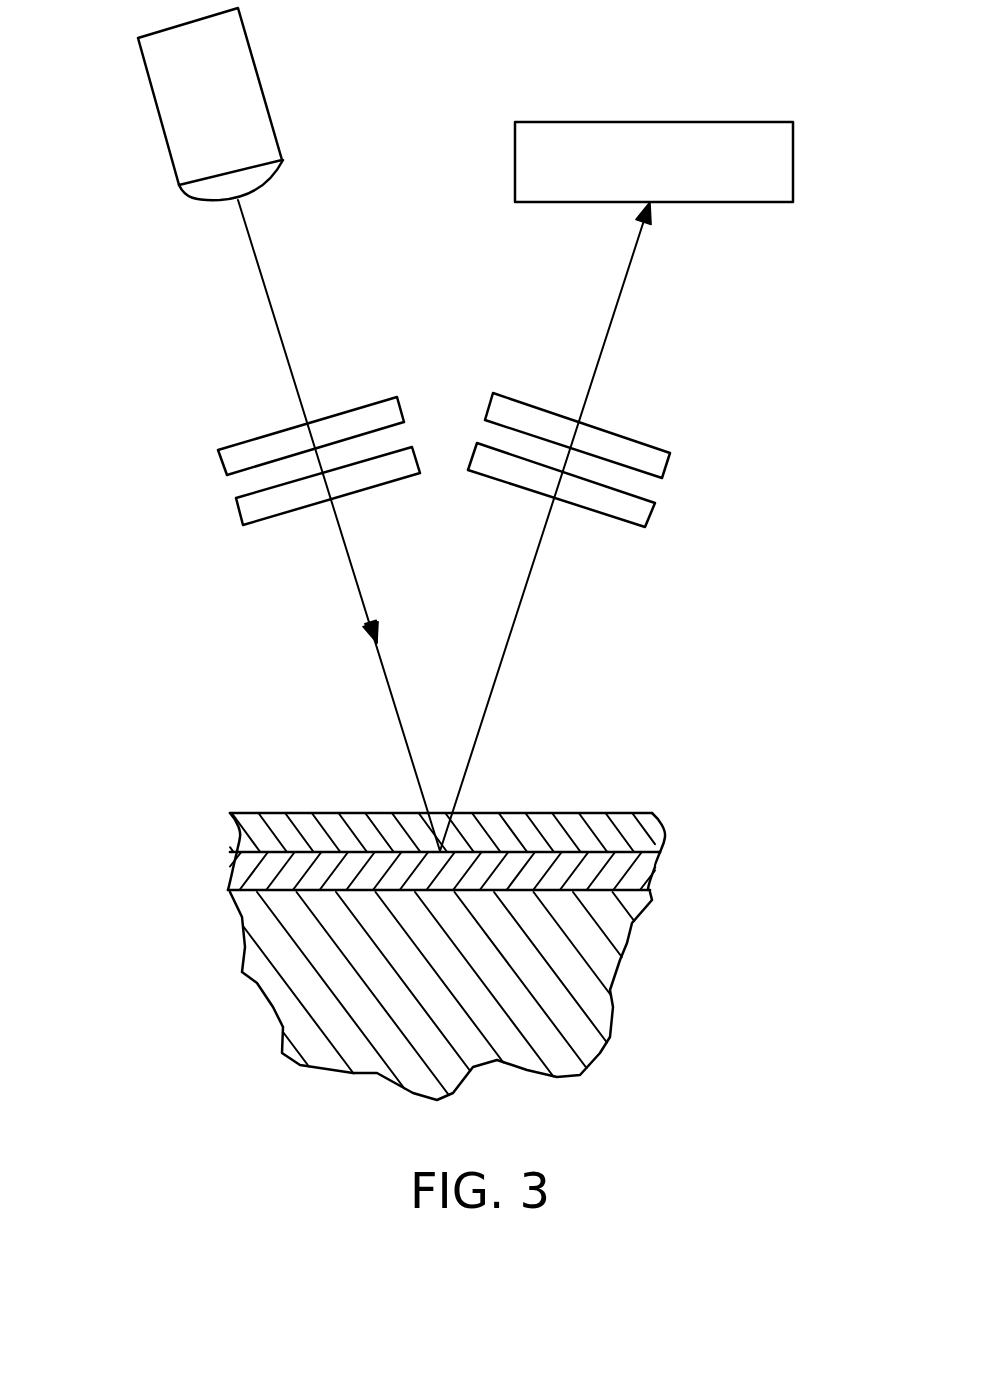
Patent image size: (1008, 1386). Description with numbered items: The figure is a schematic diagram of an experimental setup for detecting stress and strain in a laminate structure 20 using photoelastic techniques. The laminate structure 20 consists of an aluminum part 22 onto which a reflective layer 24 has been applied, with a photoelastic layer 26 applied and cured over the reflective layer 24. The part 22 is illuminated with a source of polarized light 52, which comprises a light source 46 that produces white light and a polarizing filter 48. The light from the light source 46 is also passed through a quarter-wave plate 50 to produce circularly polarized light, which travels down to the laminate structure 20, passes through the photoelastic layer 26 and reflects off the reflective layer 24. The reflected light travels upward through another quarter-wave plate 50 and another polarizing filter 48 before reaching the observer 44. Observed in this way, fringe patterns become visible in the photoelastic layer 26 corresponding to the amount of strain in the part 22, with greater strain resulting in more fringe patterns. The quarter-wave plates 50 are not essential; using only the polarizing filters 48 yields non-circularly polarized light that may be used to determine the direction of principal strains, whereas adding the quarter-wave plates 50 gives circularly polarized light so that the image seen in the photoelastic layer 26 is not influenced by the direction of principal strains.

The laminate structure 20 is at (225, 792).
The part 22 is at (617, 982).
The reflective layer 24 is at (657, 867).
The photoelastic layer 26 is at (660, 822).
The observer 44 is at (793, 153).
The light source 46 is at (173, 163).
The polarizing filter 48 is at (221, 458).
The quarter-wave plate 50 is at (240, 518).
The source of polarized light 52 is at (173, 509).